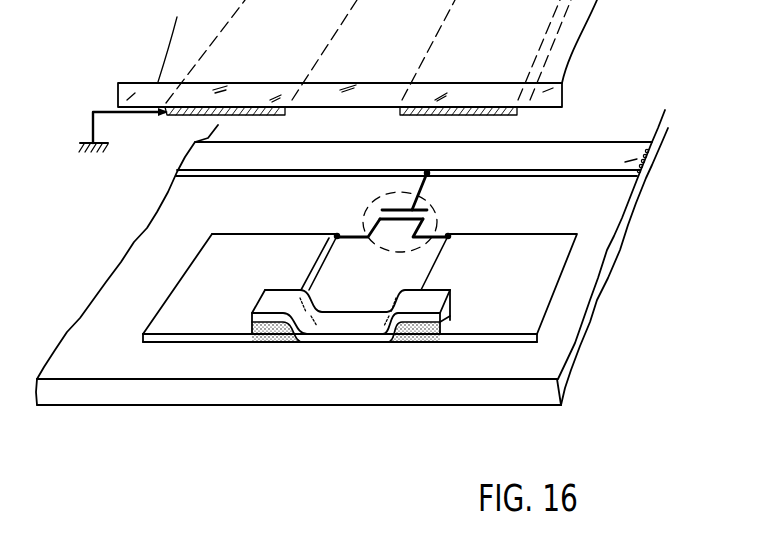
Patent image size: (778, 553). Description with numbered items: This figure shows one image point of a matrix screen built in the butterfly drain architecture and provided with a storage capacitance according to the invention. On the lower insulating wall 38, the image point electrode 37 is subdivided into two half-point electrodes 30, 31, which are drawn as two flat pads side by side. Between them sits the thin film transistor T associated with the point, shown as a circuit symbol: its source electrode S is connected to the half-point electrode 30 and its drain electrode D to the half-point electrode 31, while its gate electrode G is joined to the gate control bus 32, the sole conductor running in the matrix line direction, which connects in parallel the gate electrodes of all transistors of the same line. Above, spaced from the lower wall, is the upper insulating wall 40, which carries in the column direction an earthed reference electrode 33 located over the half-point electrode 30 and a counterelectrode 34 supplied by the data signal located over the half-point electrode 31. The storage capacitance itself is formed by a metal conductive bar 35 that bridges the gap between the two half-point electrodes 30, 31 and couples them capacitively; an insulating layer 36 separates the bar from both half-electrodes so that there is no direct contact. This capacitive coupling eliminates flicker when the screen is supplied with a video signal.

The half-point electrode 30 is at (157, 317).
The half-point electrode 31 is at (530, 323).
The gate control bus 32 is at (647, 167).
The earthed reference electrode 33 is at (286, 111).
The counterelectrode supplied by the data signal 34 is at (518, 112).
The metal conductive bar 35 is at (323, 340).
The insulating layer 36 is at (293, 340).
The image point electrode 37 is at (373, 348).
The lower insulating wall 38 is at (147, 397).
The upper insulating wall 40 is at (158, 96).
The thin film transistor T is at (375, 205).
The gate electrode G is at (420, 186).
The source electrode S is at (353, 240).
The drain electrode D is at (428, 245).